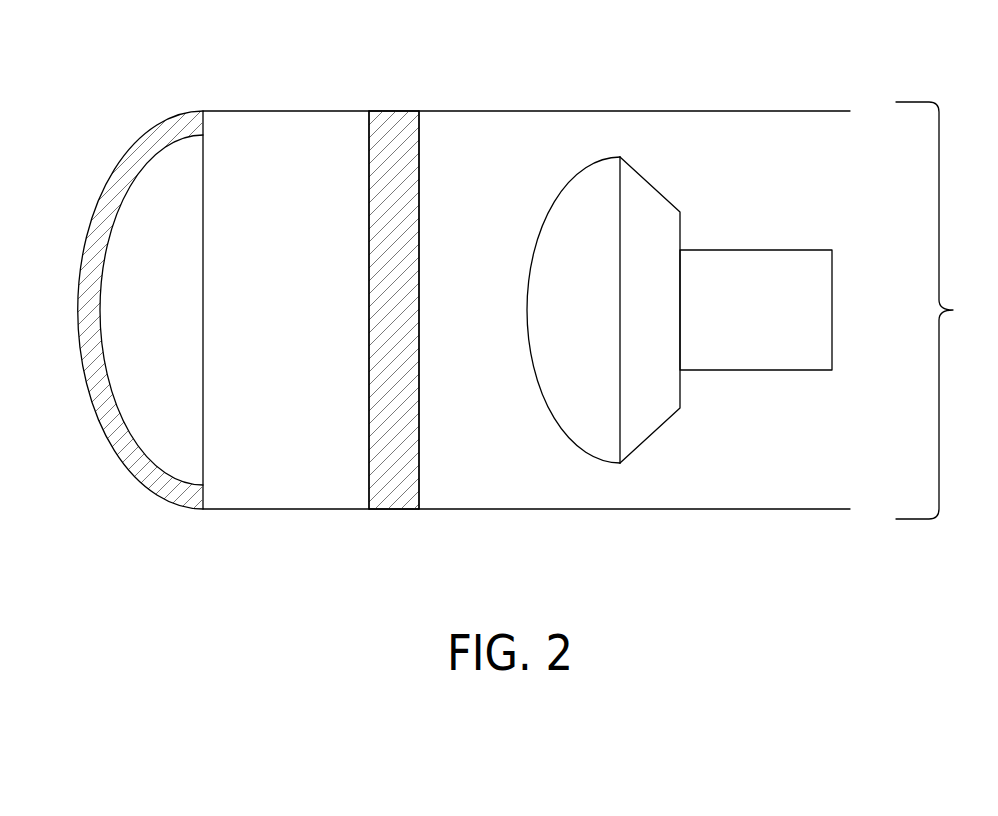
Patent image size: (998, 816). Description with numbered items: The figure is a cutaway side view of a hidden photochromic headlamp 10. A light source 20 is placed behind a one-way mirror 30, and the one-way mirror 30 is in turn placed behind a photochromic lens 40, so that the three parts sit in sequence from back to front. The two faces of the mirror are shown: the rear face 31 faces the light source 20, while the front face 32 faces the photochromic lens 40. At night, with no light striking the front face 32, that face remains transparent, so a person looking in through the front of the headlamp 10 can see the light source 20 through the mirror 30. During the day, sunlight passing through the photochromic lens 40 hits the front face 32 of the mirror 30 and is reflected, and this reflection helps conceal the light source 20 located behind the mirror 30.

The hidden photochromic headlamp 10 is at (595, 310).
The light source 20 is at (644, 472).
The one-way mirror 30 is at (396, 105).
The rear face 31 is at (419, 477).
The front face 32 is at (369, 155).
The photochromic lens 40 is at (106, 141).